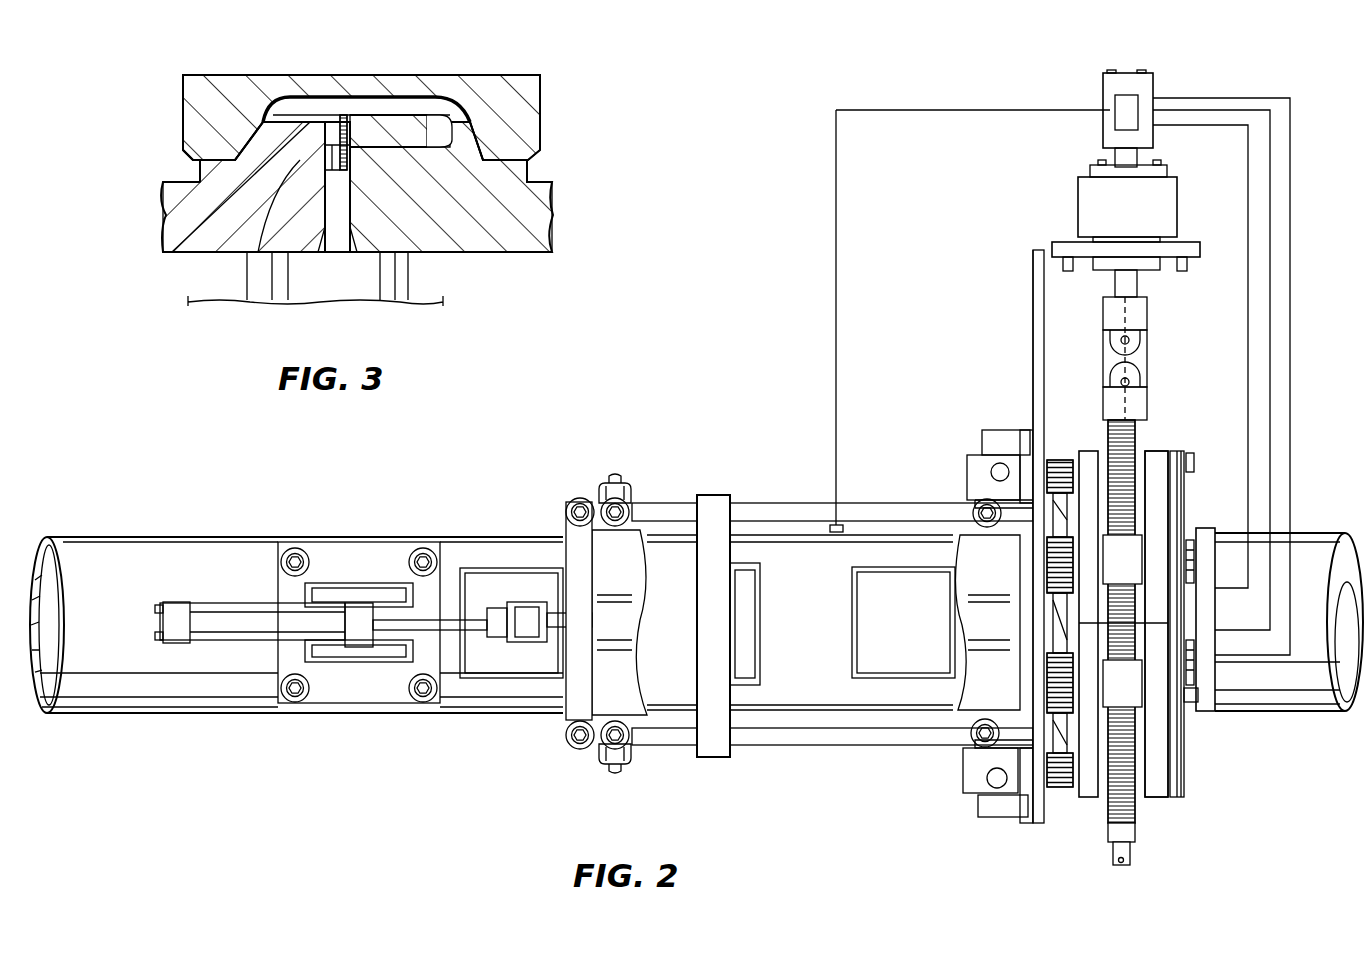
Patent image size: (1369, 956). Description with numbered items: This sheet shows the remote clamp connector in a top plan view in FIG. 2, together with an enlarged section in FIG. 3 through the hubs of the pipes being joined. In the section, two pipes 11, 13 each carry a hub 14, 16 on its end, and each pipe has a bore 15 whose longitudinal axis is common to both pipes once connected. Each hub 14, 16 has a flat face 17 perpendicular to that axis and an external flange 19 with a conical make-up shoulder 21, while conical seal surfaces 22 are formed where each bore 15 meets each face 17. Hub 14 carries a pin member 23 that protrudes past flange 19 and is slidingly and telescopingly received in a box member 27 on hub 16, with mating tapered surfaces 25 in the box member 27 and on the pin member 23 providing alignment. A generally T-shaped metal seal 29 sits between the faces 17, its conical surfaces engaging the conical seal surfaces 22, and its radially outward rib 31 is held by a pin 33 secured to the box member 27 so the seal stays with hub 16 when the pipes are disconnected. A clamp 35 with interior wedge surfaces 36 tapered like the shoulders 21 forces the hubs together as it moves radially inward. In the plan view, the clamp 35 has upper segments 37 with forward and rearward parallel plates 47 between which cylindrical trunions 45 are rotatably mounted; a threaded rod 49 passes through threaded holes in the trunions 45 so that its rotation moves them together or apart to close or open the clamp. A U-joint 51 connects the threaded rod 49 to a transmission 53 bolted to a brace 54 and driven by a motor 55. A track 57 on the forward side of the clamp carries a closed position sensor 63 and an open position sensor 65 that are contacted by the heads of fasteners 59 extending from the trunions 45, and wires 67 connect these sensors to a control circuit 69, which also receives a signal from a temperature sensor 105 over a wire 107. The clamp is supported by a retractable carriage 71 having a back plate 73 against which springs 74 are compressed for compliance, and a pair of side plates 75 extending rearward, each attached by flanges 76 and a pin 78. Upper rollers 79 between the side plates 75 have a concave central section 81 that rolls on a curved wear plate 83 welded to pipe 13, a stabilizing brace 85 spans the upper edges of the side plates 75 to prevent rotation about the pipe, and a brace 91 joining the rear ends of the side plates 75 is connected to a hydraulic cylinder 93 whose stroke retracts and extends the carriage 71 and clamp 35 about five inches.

In FIG. 2, the pipe 11 is at (1290, 540).
In FIG. 2, the pipe 13 is at (163, 550).
In FIG. 3, the hub 14 is at (531, 220).
In FIG. 3, the bore 15 is at (461, 255).
In FIG. 3, the hub 16 is at (167, 199).
In FIG. 3, the face 17 is at (388, 105).
In FIG. 3, the external flange 19 is at (433, 115).
In FIG. 3, the conical make-up shoulder 21 is at (545, 132).
In FIG. 3, the conical seal surface 22 is at (386, 262).
In FIG. 3, the pin member 23 is at (395, 80).
In FIG. 3, the mating tapered surfaces 25 is at (451, 125).
In FIG. 3, the box member 27 is at (356, 115).
In FIG. 3, the metal seal 29 is at (318, 255).
In FIG. 3, the rib 31 is at (283, 209).
In FIG. 3, the pin 33 is at (318, 115).
In FIG. 3, the clamp 35 is at (181, 101).
In FIG. 2, the clamp 35 is at (1160, 453).
In FIG. 3, the interior wedge surface 36 is at (200, 126).
In FIG. 2, the upper segment 37 is at (1157, 797).
In FIG. 2, the trunion 45 is at (1105, 562).
In FIG. 2, the parallel plate 47 is at (1089, 797).
In FIG. 2, the threaded rod 49 is at (1140, 433).
In FIG. 2, the U-joint 51 is at (1147, 347).
In FIG. 2, the transmission 53 is at (1167, 208).
In FIG. 2, the brace 54 is at (1200, 252).
In FIG. 2, the motor 55 is at (1147, 87).
In FIG. 2, the track 57 is at (1184, 508).
In FIG. 2, the fastener 59 is at (1196, 702).
In FIG. 2, the closed position sensor 63 is at (1194, 583).
In FIG. 2, the open position sensor 65 is at (1194, 462).
In FIG. 2, the wire 67 is at (1290, 317).
In FIG. 2, the control circuit 69 is at (1113, 98).
In FIG. 2, the retractable carriage 71 is at (1033, 402).
In FIG. 2, the back plate 73 is at (1033, 290).
In FIG. 2, the spring 74 is at (1057, 795).
In FIG. 2, the side plate 75 is at (780, 508).
In FIG. 2, the flange 76 is at (967, 775).
In FIG. 2, the pin 78 is at (987, 470).
In FIG. 2, the upper roller 79 is at (625, 680).
In FIG. 2, the concave central section 81 is at (957, 613).
In FIG. 2, the curved wear plate 83 is at (487, 668).
In FIG. 2, the stabilizing brace 85 is at (713, 500).
In FIG. 2, the brace 91 is at (565, 527).
In FIG. 2, the hydraulic cylinder 93 is at (430, 620).
In FIG. 2, the temperature sensor 105 is at (850, 523).
In FIG. 2, the wire 107 is at (838, 395).